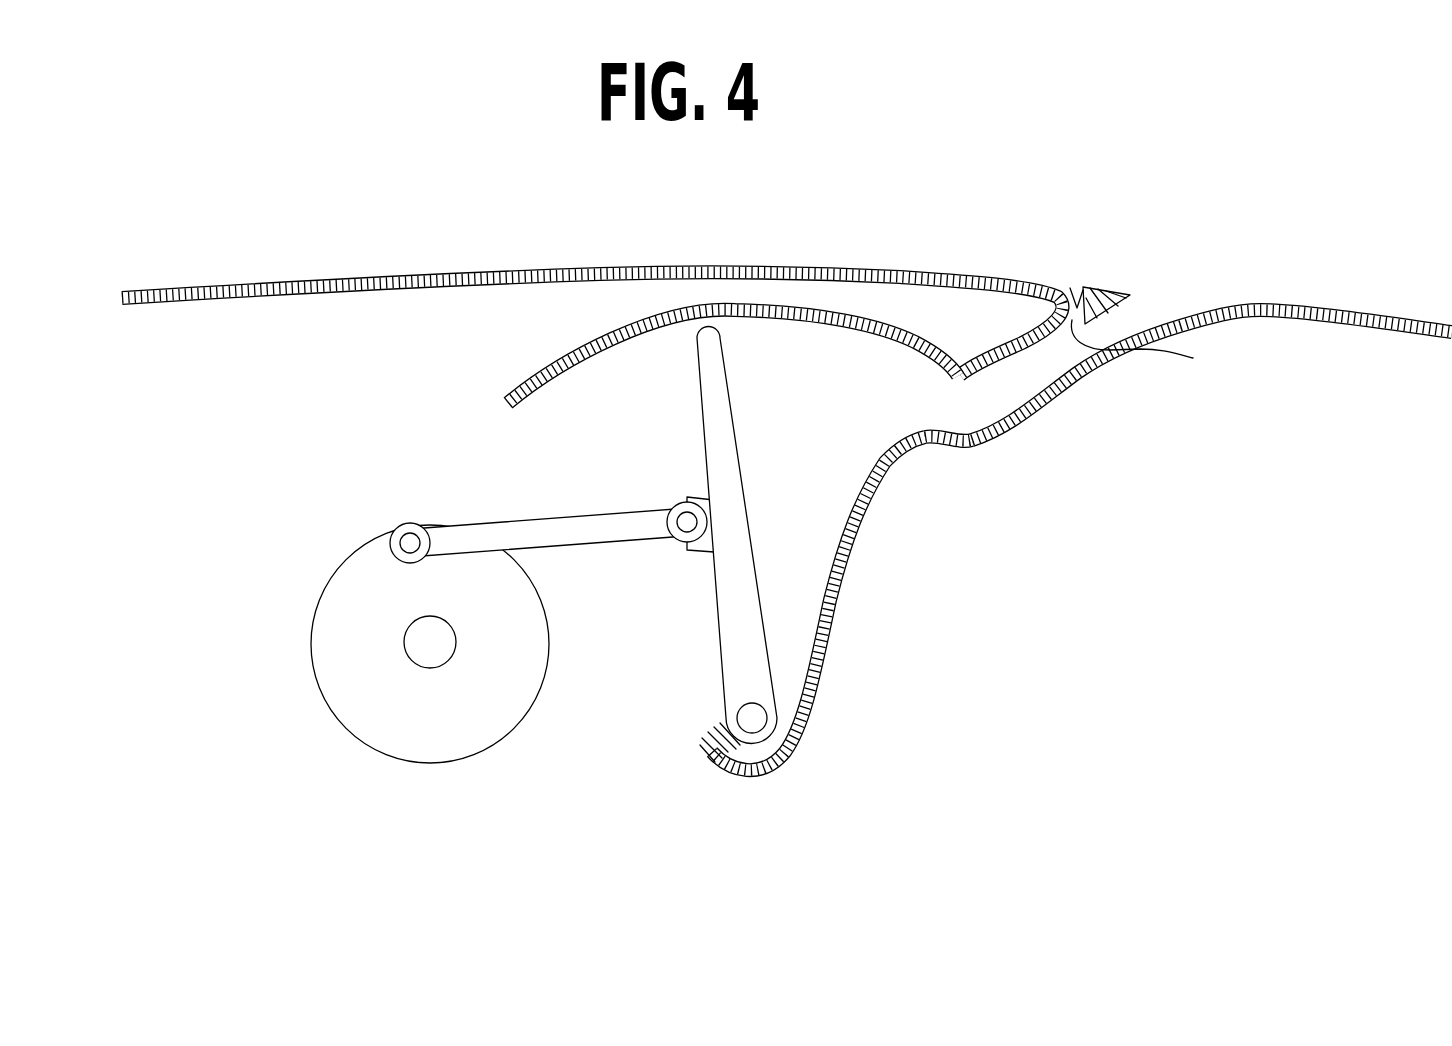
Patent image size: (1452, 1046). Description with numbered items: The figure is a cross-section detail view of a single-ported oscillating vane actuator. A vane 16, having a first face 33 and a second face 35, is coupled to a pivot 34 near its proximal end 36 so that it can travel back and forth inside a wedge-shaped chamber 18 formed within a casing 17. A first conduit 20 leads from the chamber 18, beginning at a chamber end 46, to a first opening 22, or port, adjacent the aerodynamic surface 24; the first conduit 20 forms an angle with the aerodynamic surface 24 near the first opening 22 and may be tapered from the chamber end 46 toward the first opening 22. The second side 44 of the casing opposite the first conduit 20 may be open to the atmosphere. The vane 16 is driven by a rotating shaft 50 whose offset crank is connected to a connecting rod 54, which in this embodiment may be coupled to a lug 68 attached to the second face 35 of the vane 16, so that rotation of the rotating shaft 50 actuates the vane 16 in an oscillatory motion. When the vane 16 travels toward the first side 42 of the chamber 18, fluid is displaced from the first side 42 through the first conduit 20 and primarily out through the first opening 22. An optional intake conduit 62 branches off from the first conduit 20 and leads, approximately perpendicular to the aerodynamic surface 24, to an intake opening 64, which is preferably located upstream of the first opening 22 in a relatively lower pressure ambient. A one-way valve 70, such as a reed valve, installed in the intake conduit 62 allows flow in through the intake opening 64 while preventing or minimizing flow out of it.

The vane 16 is at (737, 535).
The casing 17 is at (863, 563).
The chamber 18 is at (866, 368).
The first conduit 20 is at (1050, 365).
The first opening 22 is at (1160, 306).
The aerodynamic surface 24 is at (800, 266).
The first face 33 is at (722, 373).
The pivot 34 is at (733, 770).
The second face 35 is at (700, 412).
The proximal end 36 is at (792, 696).
The first side 42 is at (826, 464).
The second side 44 is at (632, 465).
The chamber end 46 is at (950, 410).
The rotating shaft 50 is at (322, 694).
The connecting rod 54 is at (545, 513).
The intake conduit 62 is at (1151, 353).
The intake opening 64 is at (1066, 278).
The lug 68 is at (692, 555).
The one-way valve 70 is at (1082, 312).